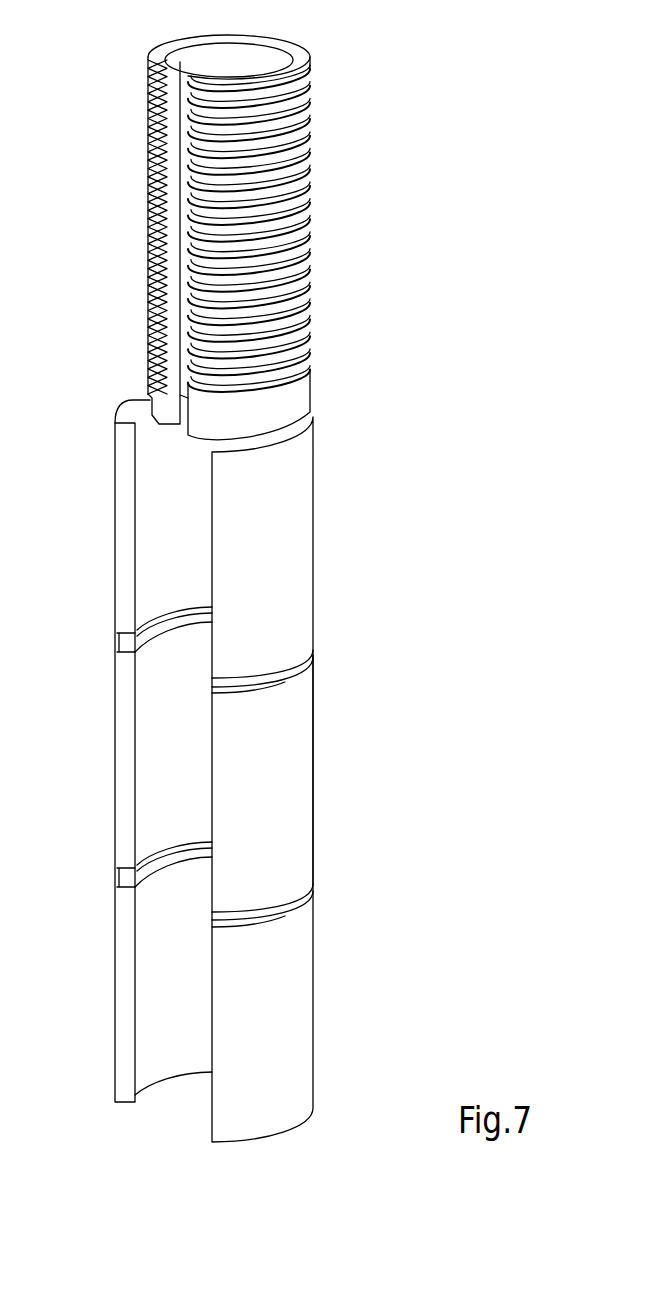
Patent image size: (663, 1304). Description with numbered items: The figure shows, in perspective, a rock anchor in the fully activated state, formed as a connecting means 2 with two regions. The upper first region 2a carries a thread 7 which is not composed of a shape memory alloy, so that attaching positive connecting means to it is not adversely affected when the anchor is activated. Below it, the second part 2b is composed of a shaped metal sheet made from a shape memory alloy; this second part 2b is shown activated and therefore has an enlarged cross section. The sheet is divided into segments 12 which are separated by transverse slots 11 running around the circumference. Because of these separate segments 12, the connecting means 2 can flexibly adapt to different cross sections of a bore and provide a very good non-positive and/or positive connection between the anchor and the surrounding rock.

The connecting means 2 is at (261, 588).
The first region 2a is at (240, 237).
The second part 2b is at (210, 771).
The thread 7 is at (152, 103).
The transverse slots 11 is at (297, 918).
The segments 12 is at (332, 655).